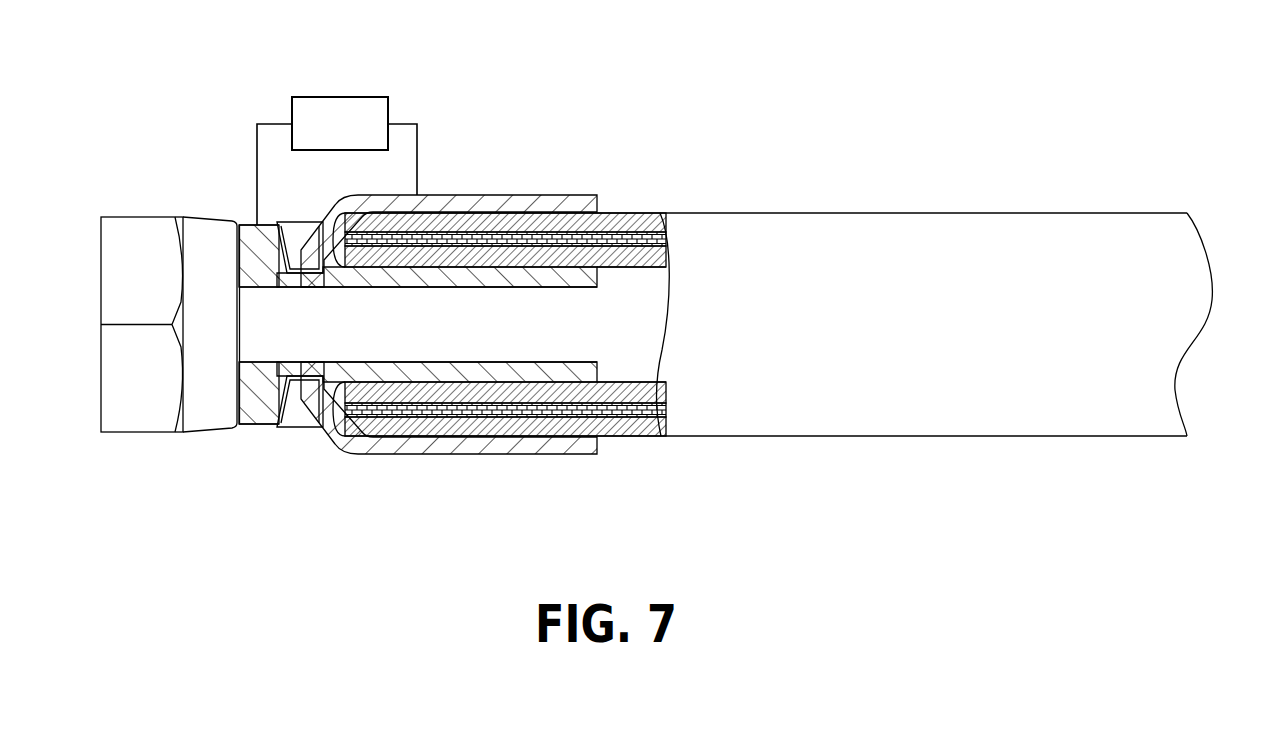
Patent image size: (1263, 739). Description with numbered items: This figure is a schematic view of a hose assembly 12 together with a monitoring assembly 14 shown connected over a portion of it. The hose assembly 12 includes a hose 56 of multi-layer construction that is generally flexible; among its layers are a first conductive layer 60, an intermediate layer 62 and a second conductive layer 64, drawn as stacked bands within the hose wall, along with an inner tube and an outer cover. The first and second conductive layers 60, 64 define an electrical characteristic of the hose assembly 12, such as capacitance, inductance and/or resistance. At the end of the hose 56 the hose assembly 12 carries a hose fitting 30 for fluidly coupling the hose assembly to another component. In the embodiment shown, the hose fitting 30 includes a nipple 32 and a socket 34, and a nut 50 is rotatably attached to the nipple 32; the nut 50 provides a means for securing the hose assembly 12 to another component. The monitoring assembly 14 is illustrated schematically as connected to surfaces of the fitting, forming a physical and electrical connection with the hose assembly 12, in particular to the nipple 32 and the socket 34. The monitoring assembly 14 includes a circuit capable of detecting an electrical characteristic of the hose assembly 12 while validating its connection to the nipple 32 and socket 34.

The hose assembly 12 is at (596, 100).
The monitoring assembly 14 is at (341, 97).
The hose fitting 30 is at (252, 434).
The nipple 32 is at (488, 300).
The socket 34 is at (469, 466).
The nut 50 is at (143, 433).
The hose 56 is at (644, 200).
The first conductive layer 60 is at (533, 250).
The intermediate layer 62 is at (510, 243).
The second conductive layer 64 is at (454, 238).